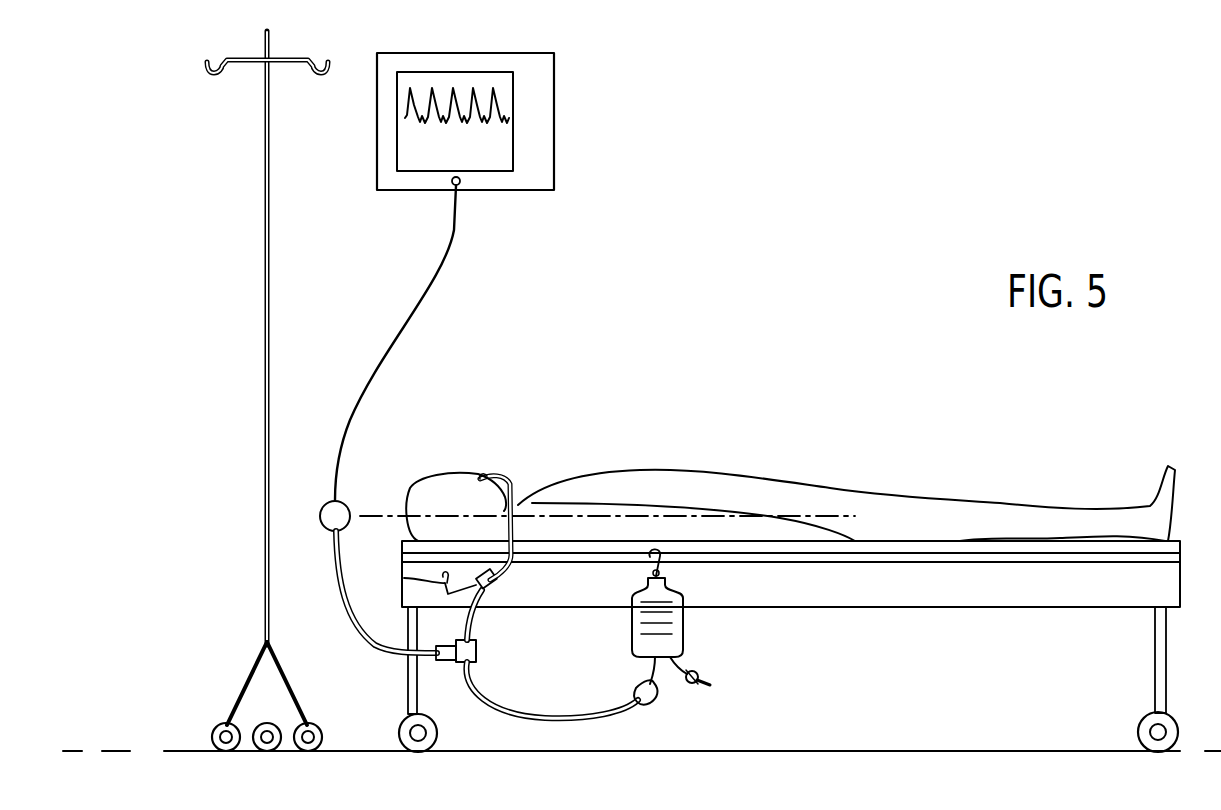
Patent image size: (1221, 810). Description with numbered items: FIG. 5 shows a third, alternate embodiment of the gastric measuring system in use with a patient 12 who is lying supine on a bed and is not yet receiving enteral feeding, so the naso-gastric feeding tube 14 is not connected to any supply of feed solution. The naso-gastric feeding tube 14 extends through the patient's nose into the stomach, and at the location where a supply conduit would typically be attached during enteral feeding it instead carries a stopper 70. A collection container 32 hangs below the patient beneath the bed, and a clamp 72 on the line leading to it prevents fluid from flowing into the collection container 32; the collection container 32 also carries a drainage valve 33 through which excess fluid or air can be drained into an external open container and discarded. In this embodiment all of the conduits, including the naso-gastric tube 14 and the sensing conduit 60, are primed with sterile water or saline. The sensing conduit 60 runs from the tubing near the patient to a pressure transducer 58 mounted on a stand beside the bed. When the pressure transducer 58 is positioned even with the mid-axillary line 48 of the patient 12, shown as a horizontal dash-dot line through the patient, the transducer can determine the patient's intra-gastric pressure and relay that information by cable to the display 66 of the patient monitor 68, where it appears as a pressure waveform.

The patient 12 is at (678, 473).
The naso-gastric feeding tube 14 is at (507, 471).
The collection container 32 is at (684, 593).
The drainage valve 33 is at (703, 675).
The mid-axillary line 48 is at (383, 513).
The pressure transducer 58 is at (326, 503).
The sensing conduit 60 is at (358, 641).
The display 66 is at (457, 72).
The patient monitor 68 is at (555, 151).
The stopper 70 is at (404, 578).
The clamp 72 is at (650, 703).